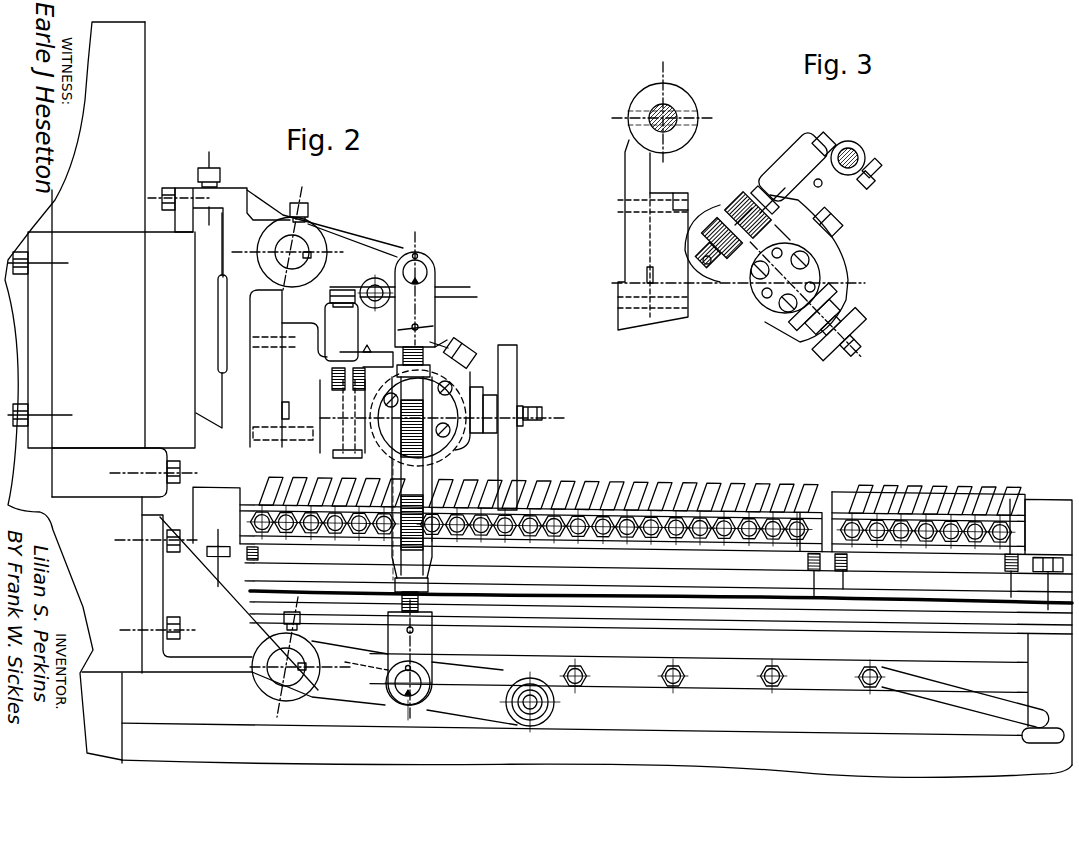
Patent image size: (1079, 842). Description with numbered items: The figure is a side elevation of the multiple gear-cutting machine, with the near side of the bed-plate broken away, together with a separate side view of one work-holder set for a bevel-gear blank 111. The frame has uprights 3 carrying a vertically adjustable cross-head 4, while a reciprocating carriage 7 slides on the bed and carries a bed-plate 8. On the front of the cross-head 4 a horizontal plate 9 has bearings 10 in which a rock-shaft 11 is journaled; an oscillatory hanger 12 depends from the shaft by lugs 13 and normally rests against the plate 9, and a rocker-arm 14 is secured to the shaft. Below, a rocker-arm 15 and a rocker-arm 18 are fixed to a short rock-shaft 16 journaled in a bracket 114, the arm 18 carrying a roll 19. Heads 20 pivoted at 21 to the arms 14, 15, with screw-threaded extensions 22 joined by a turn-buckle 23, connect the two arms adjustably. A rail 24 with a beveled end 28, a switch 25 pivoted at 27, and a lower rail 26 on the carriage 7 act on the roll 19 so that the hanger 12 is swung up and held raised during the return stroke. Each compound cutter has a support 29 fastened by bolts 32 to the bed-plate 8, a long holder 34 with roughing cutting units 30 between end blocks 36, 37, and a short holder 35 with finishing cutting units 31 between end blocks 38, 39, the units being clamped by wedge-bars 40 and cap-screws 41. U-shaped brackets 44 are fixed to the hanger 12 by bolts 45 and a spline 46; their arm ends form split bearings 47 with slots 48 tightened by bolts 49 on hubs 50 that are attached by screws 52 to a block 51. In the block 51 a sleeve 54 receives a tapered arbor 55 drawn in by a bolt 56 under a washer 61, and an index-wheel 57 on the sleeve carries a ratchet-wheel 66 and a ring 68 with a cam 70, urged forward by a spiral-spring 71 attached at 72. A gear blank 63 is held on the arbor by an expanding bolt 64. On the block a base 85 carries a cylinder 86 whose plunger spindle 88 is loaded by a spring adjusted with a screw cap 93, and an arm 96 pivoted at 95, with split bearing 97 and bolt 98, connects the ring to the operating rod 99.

In FIG. 2, the uprights 3 is at (86, 391).
In FIG. 2, the cross-head 4 is at (117, 330).
In FIG. 2, the carriage 7 is at (597, 700).
In FIG. 2, the bed-plate 8 is at (877, 588).
In FIG. 2, the horizontal plate 9 is at (219, 232).
In FIG. 2, the bearings 10 is at (276, 245).
In FIG. 2, the rock-shaft 11 is at (306, 250).
In FIG. 3, the rock-shaft 11 is at (672, 110).
In FIG. 2, the hanger 12 is at (281, 368).
In FIG. 3, the hanger 12 is at (635, 168).
In FIG. 3, the lugs 13 is at (648, 100).
In FIG. 2, the rocker-arm 14 is at (358, 244).
In FIG. 2, the rocker-arm 15 is at (350, 670).
In FIG. 2, the rock-shaft 16 is at (280, 674).
In FIG. 2, the rocker-arm 18 is at (472, 693).
In FIG. 2, the roll 19 is at (555, 705).
In FIG. 2, the heads 20 is at (411, 476).
In FIG. 2, the pivots 21 is at (432, 270).
In FIG. 2, the screw-threaded extensions 22 is at (428, 478).
In FIG. 2, the turn-buckle 23 is at (400, 465).
In FIG. 2, the rail 24 is at (656, 678).
In FIG. 2, the switch 25 is at (942, 697).
In FIG. 2, the rail 26 is at (1052, 737).
In FIG. 2, the pivot 27 is at (882, 671).
In FIG. 2, the bevel 28 is at (380, 655).
In FIG. 2, the support 29 is at (1025, 530).
In FIG. 2, the cutting units 30 is at (703, 480).
In FIG. 2, the cutting units 31 is at (970, 486).
In FIG. 2, the bolts 32 is at (1050, 573).
In FIG. 2, the long holder 34 is at (697, 535).
In FIG. 2, the short holder 35 is at (952, 545).
In FIG. 2, the end block 36 is at (262, 497).
In FIG. 2, the end block 37 is at (803, 490).
In FIG. 2, the end block 38 is at (840, 494).
In FIG. 2, the end block 39 is at (1010, 494).
In FIG. 2, the wedge-bars 40 is at (613, 532).
In FIG. 2, the cap-screws 41 is at (546, 537).
In FIG. 2, the U-shaped bracket 44 is at (327, 412).
In FIG. 3, the U-shaped bracket 44 is at (738, 255).
In FIG. 2, the bolts 45 is at (318, 333).
In FIG. 3, the bolts 45 is at (685, 192).
In FIG. 2, the spline 46 is at (283, 409).
In FIG. 3, the spline 46 is at (647, 272).
In FIG. 2, the bearing 47 is at (470, 366).
In FIG. 3, the bearing 47 is at (830, 243).
In FIG. 2, the slot 48 is at (440, 346).
In FIG. 3, the slot 48 is at (822, 186).
In FIG. 2, the bolt 49 is at (472, 350).
In FIG. 3, the bolt 49 is at (856, 213).
In FIG. 2, the hub 50 is at (392, 418).
In FIG. 3, the hub 50 is at (783, 303).
In FIG. 2, the block 51 is at (480, 396).
In FIG. 3, the block 51 is at (847, 301).
In FIG. 2, the screws 52 is at (452, 420).
In FIG. 3, the screws 52 is at (808, 258).
In FIG. 2, the sleeve 54 is at (490, 406).
In FIG. 3, the sleeve 54 is at (857, 312).
In FIG. 2, the arbor 55 is at (505, 412).
In FIG. 3, the arbor 55 is at (813, 341).
In FIG. 3, the bolt 56 is at (718, 202).
In FIG. 2, the index-wheel 57 is at (333, 374).
In FIG. 3, the index-wheel 57 is at (744, 195).
In FIG. 3, the washer 61 is at (730, 192).
In FIG. 2, the gear blank 63 is at (507, 348).
In FIG. 2, the expanding bolt 64 is at (540, 418).
In FIG. 3, the expanding bolt 64 is at (880, 352).
In FIG. 2, the ratchet-wheel 66 is at (338, 396).
In FIG. 3, the ratchet-wheel 66 is at (718, 258).
In FIG. 3, the ring 68 is at (704, 229).
In FIG. 3, the cam 70 is at (762, 178).
In FIG. 2, the spiral-spring 71 is at (343, 455).
In FIG. 3, the spiral-spring 71 is at (703, 258).
In FIG. 3, the spring attachment 72 is at (784, 234).
In FIG. 2, the base 85 is at (366, 358).
In FIG. 3, the base 85 is at (776, 193).
In FIG. 2, the cylinder 86 is at (341, 332).
In FIG. 3, the cylinder 86 is at (779, 153).
In FIG. 2, the spindle 88 is at (342, 286).
In FIG. 3, the spindle 88 is at (847, 130).
In FIG. 2, the screw cap 93 is at (354, 290).
In FIG. 3, the screw cap 93 is at (858, 150).
In FIG. 2, the pivot 95 is at (427, 316).
In FIG. 3, the pivot 95 is at (845, 186).
In FIG. 2, the arm 96 is at (375, 299).
In FIG. 3, the arm 96 is at (880, 178).
In FIG. 2, the split bearing 97 is at (466, 297).
In FIG. 3, the split bearing 97 is at (878, 172).
In FIG. 3, the bolt 98 is at (880, 165).
In FIG. 2, the operating rod 99 is at (452, 286).
In FIG. 3, the operating rod 99 is at (870, 156).
In FIG. 3, the bevel-gear blank 111 is at (882, 334).
In FIG. 2, the bracket 114 is at (233, 612).